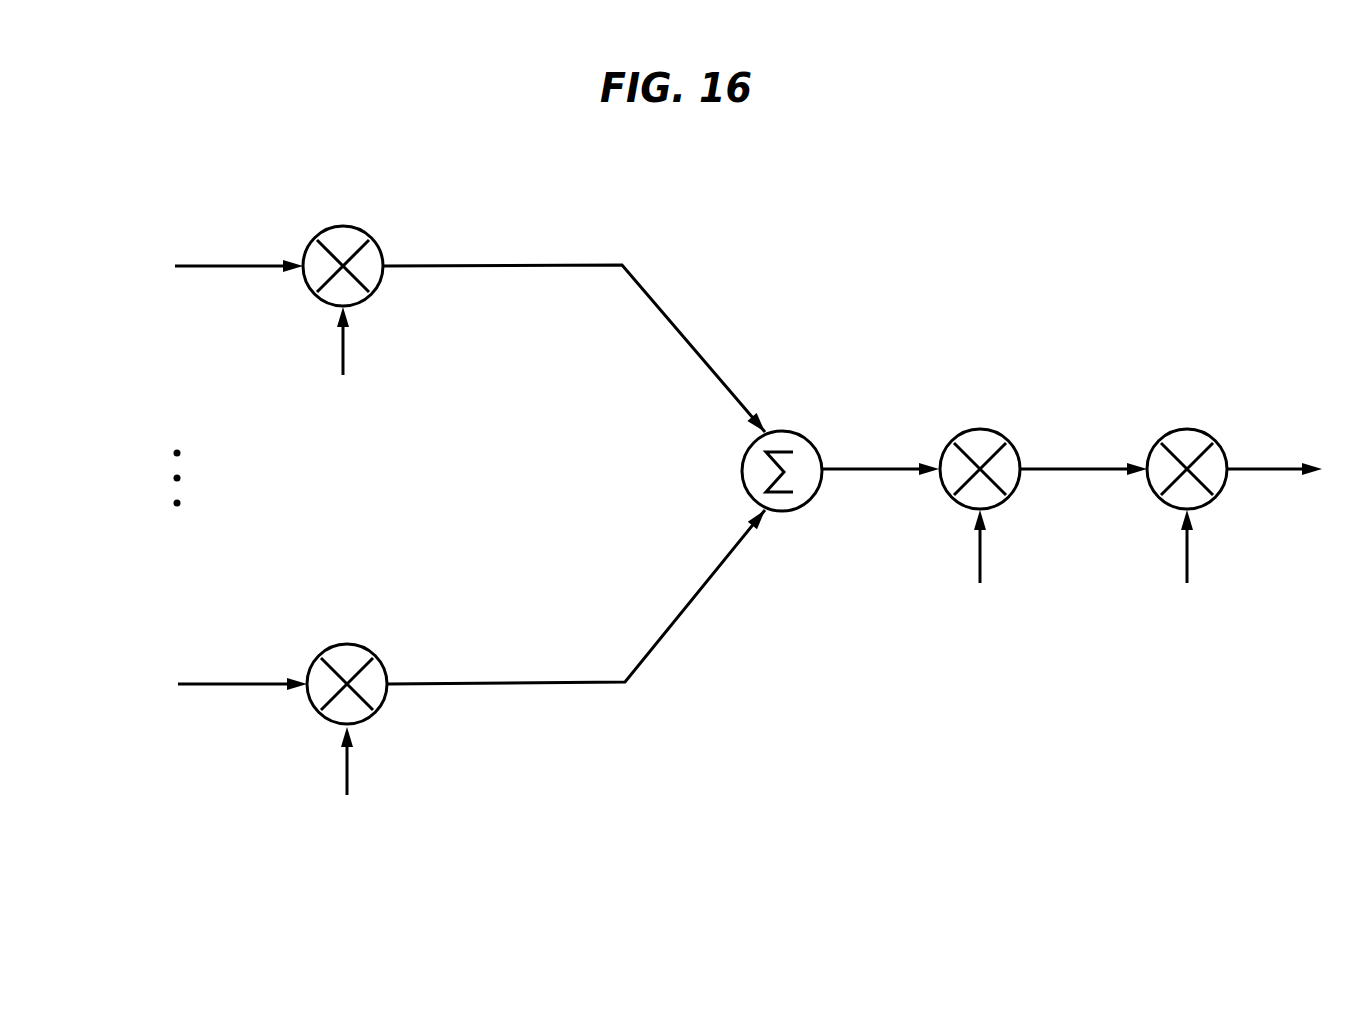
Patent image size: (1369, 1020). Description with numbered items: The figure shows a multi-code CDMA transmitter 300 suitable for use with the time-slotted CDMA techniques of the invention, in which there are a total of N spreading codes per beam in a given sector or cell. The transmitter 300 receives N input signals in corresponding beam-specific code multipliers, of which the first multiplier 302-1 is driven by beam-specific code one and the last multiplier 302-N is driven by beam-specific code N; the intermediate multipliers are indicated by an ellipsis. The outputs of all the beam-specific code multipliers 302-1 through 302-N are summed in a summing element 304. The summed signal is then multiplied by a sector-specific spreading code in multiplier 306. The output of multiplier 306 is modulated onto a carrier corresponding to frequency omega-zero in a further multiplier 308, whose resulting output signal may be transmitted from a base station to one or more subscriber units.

The multi-code CDMA transmitter 300 is at (886, 220).
The beam-specific code multiplier 302-1 is at (379, 288).
The beam-specific code multiplier 302-N is at (387, 702).
The summing element 304 is at (823, 490).
The sector-specific spreading code multiplier 306 is at (1018, 488).
The carrier modulation multiplier 308 is at (1225, 488).